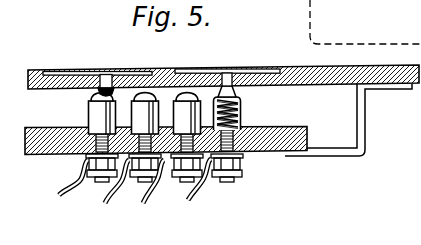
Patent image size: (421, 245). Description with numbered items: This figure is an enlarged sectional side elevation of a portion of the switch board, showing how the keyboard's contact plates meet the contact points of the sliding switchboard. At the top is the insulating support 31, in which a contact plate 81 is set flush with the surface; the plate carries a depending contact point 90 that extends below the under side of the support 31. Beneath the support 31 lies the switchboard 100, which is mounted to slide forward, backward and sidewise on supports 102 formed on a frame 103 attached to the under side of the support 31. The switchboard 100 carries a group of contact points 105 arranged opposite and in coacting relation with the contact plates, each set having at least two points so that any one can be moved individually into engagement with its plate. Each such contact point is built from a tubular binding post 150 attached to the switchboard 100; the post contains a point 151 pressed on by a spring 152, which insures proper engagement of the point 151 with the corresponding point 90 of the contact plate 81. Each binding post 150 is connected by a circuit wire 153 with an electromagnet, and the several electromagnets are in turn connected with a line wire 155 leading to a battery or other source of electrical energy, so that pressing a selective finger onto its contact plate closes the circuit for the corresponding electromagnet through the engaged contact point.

The support 31 is at (312, 67).
The contact plate 81 is at (101, 71).
The contact point 90 is at (97, 90).
The switchboard 100 is at (287, 127).
The supports 102 is at (343, 158).
The frame 103 is at (376, 120).
The contact points 105 is at (187, 95).
The tubular binding post 150 is at (238, 118).
The point 151 is at (222, 91).
The spring 152 is at (236, 95).
The circuit wire 153 is at (112, 192).
The line wire 155 is at (194, 188).